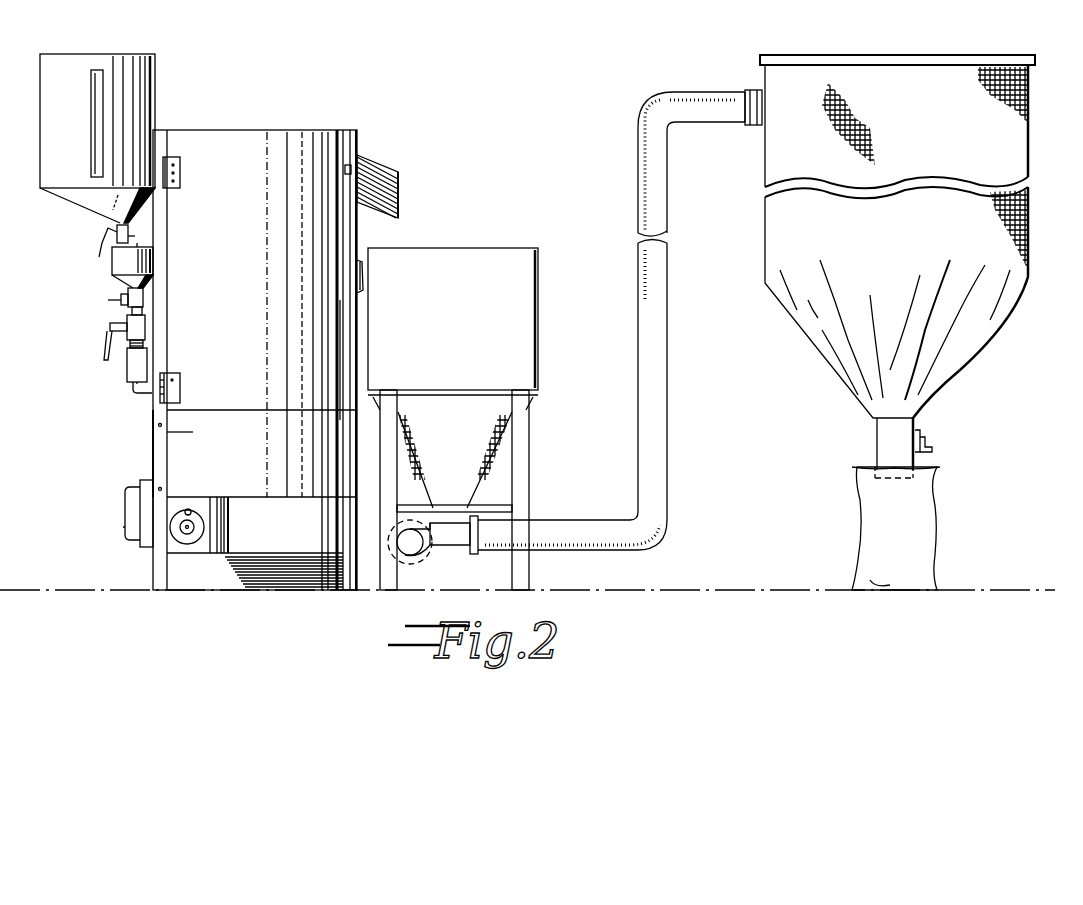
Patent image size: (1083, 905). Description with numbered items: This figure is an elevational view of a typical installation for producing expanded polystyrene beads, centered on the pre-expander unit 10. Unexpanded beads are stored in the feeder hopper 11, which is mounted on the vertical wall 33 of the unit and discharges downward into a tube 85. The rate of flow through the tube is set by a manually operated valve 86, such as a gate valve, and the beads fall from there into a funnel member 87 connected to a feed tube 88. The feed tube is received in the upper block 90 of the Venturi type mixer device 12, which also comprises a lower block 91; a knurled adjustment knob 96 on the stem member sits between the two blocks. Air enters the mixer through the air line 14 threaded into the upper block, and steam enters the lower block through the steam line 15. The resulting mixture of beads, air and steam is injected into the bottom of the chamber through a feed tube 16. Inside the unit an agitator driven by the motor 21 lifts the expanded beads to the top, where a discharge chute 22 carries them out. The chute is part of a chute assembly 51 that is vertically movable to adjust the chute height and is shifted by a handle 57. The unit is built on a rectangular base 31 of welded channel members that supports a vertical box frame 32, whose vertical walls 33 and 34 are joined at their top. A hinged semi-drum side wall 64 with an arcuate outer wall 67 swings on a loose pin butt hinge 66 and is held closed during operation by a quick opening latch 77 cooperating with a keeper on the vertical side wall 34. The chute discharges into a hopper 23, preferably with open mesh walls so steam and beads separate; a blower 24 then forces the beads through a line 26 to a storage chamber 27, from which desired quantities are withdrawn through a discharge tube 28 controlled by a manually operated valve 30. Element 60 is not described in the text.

The pre-expander unit 10 is at (285, 130).
The feeder hopper 11 is at (130, 81).
The Venturi type mixer device 12 is at (100, 316).
The air line 14 is at (110, 300).
The steam line 15 is at (110, 328).
The feed tube 16 is at (140, 393).
The motor 21 is at (213, 525).
The discharge chute 22 is at (380, 156).
The hopper 23 is at (488, 265).
The blower 24 is at (432, 560).
The line 26 is at (638, 318).
The storage chamber 27 is at (1030, 92).
The discharge tube 28 is at (883, 441).
The manually operated valve 30 is at (927, 432).
The rectangular base 31 is at (250, 572).
The vertical box frame 32 is at (145, 462).
The vertical wall 33 is at (153, 443).
The vertical side wall 34 is at (350, 358).
The chute assembly 51 is at (402, 187).
The handle 57 is at (364, 277).
The panel 60 is at (167, 432).
The semi-drum side wall 64 is at (233, 155).
The loose pin butt hinge 66 is at (180, 170).
The arcuate outer wall 67 is at (252, 314).
The quick opening latch 77 is at (348, 170).
The tube 85 is at (128, 222).
The manually operated valve 86 is at (135, 237).
The funnel member 87 is at (112, 262).
The feed tube 88 is at (142, 312).
The upper block 90 is at (145, 327).
The lower block 91 is at (133, 375).
The knurled adjustment knob 96 is at (143, 344).